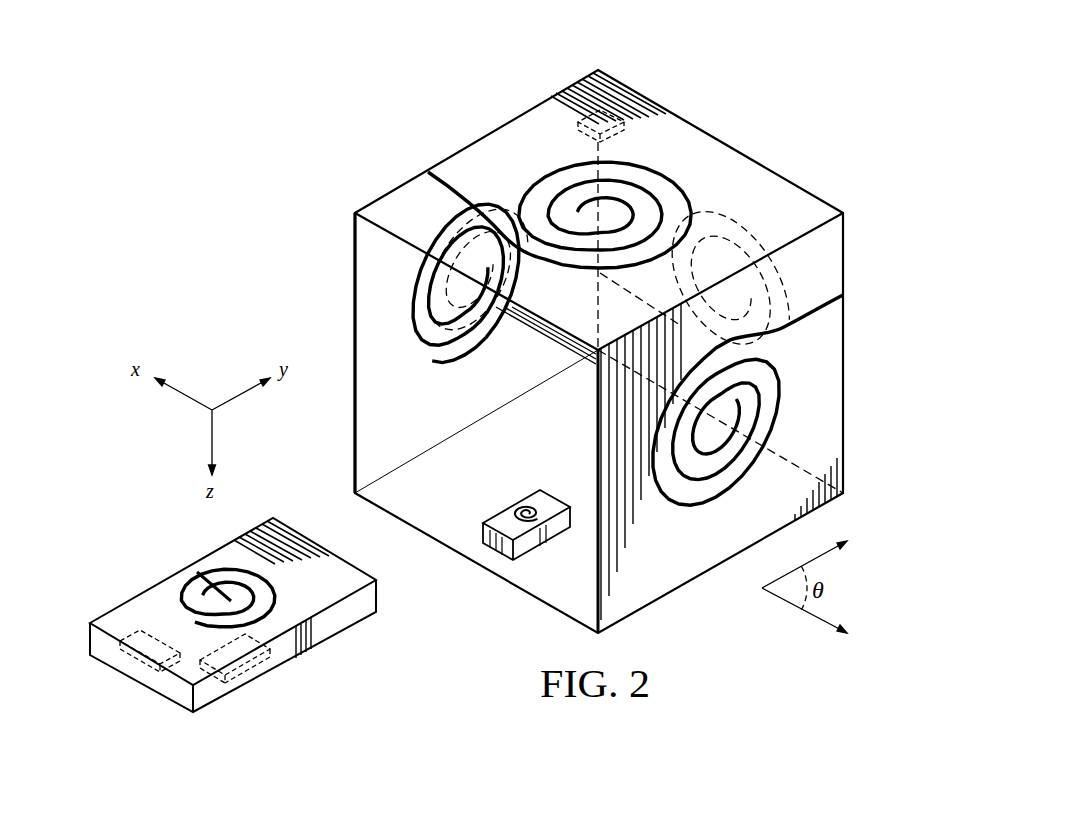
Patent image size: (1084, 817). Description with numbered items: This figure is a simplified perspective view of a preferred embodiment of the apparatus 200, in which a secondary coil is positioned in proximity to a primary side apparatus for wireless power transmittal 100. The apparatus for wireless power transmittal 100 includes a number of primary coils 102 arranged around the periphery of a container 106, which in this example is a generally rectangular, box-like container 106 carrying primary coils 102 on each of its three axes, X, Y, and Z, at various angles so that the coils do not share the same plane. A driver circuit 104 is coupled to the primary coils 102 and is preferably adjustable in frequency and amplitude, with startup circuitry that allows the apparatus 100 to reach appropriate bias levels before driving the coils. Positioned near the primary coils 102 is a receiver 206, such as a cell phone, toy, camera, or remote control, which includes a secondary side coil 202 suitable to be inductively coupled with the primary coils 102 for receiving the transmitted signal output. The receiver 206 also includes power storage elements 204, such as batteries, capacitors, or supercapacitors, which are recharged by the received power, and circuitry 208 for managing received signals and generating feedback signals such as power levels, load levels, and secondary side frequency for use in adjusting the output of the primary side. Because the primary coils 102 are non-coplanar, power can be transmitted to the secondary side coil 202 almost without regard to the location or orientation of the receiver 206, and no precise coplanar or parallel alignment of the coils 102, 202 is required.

The apparatus for wireless power transmittal 100 is at (822, 56).
The primary coils 102 is at (630, 166).
The driver circuit 104 is at (570, 118).
The container 106 is at (780, 158).
The apparatus 200 is at (100, 229).
The secondary side coil 202 is at (200, 578).
The power storage elements 204 is at (118, 660).
The receiver 206 is at (322, 663).
The circuitry 208 is at (258, 672).